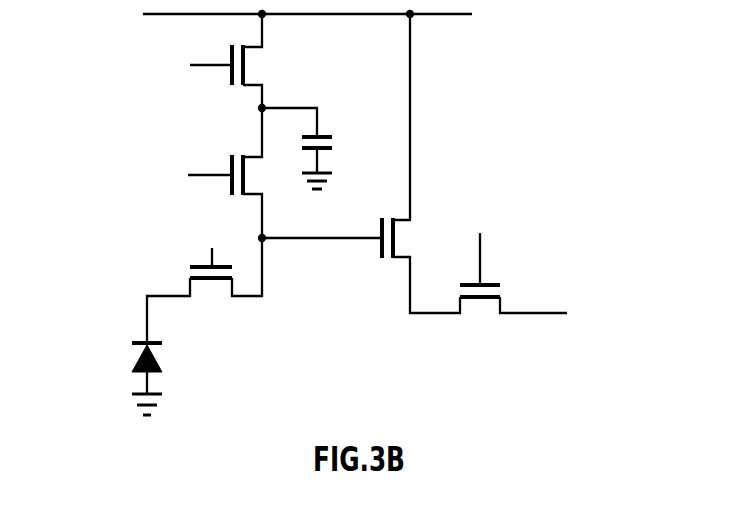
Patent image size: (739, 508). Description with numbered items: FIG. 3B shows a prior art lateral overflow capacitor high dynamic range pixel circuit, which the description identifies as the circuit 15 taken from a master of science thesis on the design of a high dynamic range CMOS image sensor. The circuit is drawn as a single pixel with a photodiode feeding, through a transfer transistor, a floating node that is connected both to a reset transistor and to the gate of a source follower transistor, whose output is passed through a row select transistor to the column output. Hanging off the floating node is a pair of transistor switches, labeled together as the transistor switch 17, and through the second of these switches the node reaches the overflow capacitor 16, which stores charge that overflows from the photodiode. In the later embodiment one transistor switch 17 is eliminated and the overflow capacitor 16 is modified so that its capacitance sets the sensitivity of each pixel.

The pixel circuit 15 is at (484, 168).
The overflow capacitor CS 16 is at (328, 117).
The transistor switch 17 is at (228, 187).